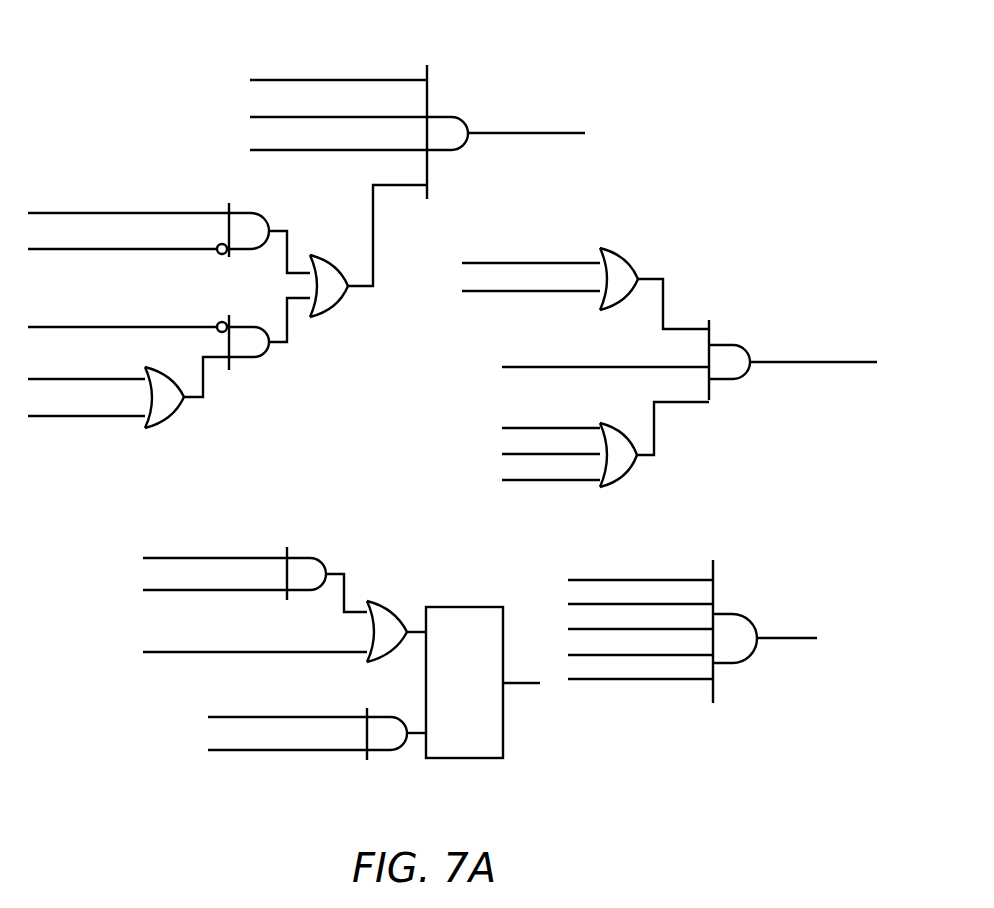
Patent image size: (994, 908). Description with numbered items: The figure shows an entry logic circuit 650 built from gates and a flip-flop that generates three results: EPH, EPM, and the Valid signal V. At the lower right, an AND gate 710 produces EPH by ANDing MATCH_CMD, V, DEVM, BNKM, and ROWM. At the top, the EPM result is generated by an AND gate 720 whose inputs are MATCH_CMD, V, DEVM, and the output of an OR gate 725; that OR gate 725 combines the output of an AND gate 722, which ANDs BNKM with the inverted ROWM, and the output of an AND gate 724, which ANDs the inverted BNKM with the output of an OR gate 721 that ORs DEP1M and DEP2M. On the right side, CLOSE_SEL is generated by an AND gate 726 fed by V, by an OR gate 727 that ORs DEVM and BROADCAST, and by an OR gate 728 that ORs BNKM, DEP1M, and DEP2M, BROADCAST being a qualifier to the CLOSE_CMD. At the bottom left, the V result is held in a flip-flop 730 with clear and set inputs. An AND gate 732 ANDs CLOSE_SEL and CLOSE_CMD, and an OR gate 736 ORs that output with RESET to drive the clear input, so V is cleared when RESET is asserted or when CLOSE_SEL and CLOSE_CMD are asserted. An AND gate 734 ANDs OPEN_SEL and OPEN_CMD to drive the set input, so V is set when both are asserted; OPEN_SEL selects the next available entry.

The entry logic circuit 650 is at (703, 76).
The AND gate 710 is at (740, 628).
The AND gate 720 is at (448, 120).
The OR gate 721 is at (162, 412).
The AND gate 722 is at (250, 218).
The AND gate 724 is at (250, 355).
The OR gate 725 is at (332, 275).
The AND gate 726 is at (733, 350).
The OR gate 727 is at (618, 263).
The OR gate 728 is at (623, 462).
The flip-flop 730 is at (465, 610).
The AND gate 732 is at (303, 563).
The AND gate 734 is at (385, 743).
The OR gate 736 is at (383, 618).